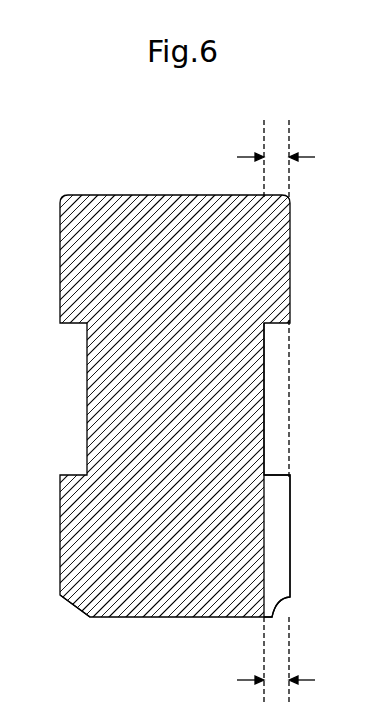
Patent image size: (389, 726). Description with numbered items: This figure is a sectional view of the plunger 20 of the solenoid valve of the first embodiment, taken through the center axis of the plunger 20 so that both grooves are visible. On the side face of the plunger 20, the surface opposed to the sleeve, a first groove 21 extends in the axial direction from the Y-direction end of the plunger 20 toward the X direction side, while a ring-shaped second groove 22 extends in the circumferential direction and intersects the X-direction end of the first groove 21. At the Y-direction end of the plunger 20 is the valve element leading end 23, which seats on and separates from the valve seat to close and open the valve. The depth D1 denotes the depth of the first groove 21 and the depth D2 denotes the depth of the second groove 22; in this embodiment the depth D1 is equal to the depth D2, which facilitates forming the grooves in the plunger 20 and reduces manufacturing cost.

The plunger 20 is at (110, 177).
The first groove 21 is at (287, 536).
The second groove 22 is at (279, 399).
The valve element leading end 23 is at (88, 617).
The depth D1 is at (293, 660).
The depth D2 is at (296, 158).